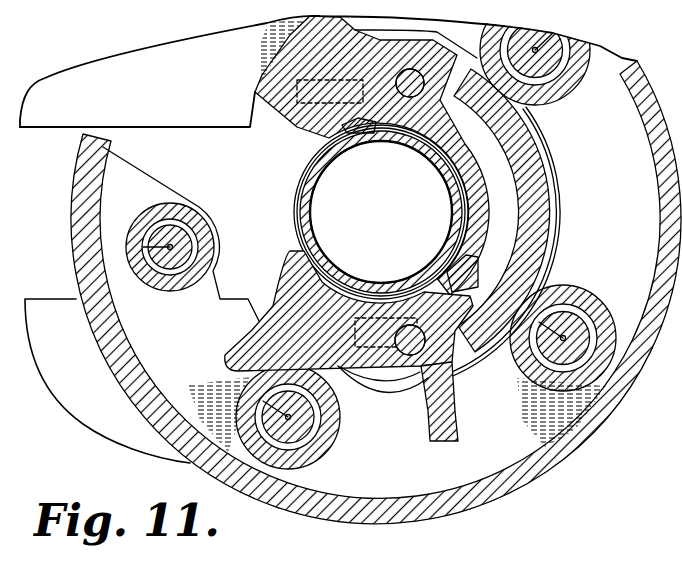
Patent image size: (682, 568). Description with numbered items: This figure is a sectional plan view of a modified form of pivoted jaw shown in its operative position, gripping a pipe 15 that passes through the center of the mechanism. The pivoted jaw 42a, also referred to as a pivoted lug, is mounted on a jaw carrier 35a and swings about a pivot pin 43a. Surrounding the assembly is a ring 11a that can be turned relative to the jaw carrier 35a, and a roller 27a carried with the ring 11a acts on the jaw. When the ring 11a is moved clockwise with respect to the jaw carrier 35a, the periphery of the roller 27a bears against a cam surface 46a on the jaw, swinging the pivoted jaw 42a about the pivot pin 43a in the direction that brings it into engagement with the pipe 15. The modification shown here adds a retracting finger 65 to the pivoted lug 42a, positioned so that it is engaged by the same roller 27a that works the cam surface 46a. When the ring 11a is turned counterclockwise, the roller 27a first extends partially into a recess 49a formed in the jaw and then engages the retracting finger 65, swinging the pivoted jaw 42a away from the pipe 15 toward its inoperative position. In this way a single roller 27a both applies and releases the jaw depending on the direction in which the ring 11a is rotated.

The ring 11a is at (586, 430).
The pipe 15 is at (301, 201).
The roller 27a is at (334, 450).
The jaw carrier 35a is at (562, 213).
The pivoted jaw 42a is at (270, 289).
The pivot pin 43a is at (452, 368).
The cam surface 46a is at (343, 395).
The recess 49a is at (403, 372).
The retracting finger 65 is at (446, 440).